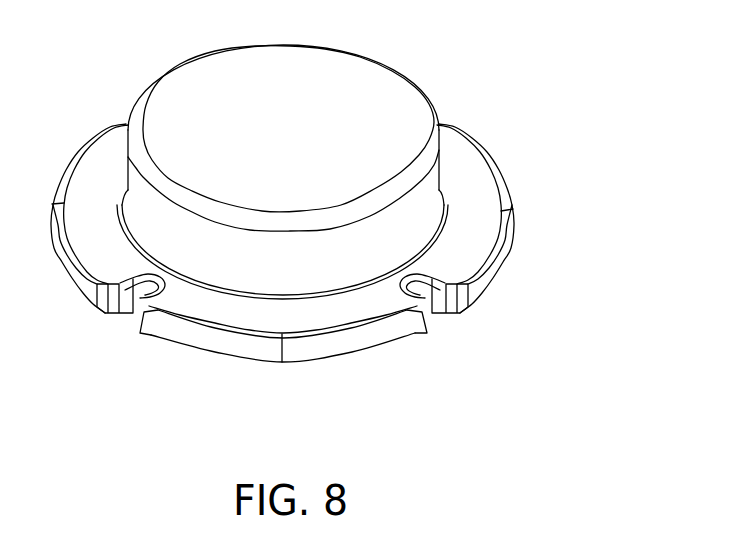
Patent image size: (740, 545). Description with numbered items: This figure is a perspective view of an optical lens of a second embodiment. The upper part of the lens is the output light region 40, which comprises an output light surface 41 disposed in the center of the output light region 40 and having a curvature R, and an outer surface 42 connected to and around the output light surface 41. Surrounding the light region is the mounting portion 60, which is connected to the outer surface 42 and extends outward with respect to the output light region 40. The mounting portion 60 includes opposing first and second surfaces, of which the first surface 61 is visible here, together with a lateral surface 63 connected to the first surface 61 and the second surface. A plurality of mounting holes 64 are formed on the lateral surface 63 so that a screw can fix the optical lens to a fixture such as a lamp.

The output light region 40 is at (536, 76).
The output light surface 41 is at (392, 94).
The outer surface 42 is at (431, 175).
The mounting portion 60 is at (600, 214).
The first surface 61 is at (483, 233).
The lateral surface 63 is at (502, 257).
The mounting holes 64 is at (440, 318).